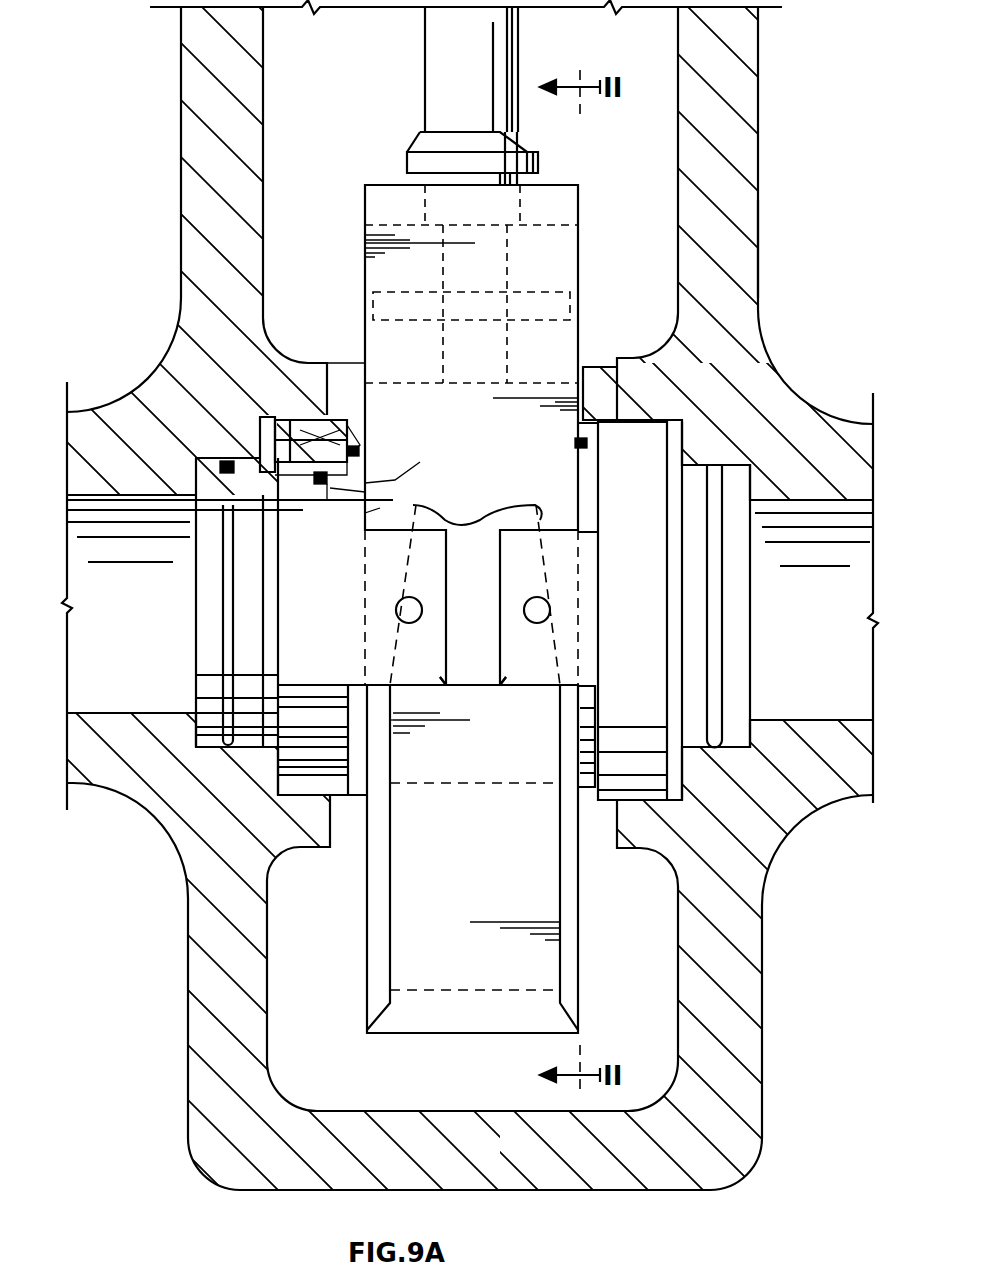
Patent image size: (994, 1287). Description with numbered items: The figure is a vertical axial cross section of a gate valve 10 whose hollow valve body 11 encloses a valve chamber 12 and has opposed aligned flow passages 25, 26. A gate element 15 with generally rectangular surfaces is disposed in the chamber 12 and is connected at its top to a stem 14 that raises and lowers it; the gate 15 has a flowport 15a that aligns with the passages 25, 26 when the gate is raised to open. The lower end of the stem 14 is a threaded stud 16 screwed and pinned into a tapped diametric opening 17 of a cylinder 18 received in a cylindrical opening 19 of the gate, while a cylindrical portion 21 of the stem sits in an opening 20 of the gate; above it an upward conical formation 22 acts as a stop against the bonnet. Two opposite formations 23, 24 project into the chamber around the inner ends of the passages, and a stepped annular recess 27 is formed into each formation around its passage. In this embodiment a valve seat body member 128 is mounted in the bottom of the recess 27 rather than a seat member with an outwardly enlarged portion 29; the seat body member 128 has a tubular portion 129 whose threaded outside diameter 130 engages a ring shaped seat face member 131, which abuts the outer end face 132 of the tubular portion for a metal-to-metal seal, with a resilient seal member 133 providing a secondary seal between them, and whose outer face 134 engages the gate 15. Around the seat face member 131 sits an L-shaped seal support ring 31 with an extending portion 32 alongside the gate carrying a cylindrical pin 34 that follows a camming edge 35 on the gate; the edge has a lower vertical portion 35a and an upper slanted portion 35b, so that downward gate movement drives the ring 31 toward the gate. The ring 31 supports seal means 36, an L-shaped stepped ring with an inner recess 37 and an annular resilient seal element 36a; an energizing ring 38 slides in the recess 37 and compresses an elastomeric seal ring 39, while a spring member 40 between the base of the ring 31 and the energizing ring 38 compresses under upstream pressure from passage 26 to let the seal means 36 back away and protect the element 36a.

The gate valve 10 is at (752, 184).
The valve body 11 is at (758, 250).
The valve chamber 12 is at (678, 108).
The stem 14 is at (425, 42).
The gate element 15 is at (578, 210).
The flowport 15a is at (455, 783).
The threaded stud 16 is at (440, 262).
The tapped diametric opening 17 is at (505, 262).
The cylinder 18 is at (578, 296).
The cylindrical opening 19 is at (545, 228).
The opening 20 is at (425, 215).
The cylindrical portion 21 is at (405, 170).
The upward conical formation 22 is at (418, 132).
The formation 23 is at (322, 363).
The formation 24 is at (583, 370).
The flow passage 25 is at (92, 713).
The flow passage 26 is at (826, 720).
The stepped annular recess 27 is at (648, 423).
The outwardly enlarged portion 29 is at (196, 800).
The seal support ring 31 is at (353, 430).
The extending portion 32 is at (475, 692).
The cylindrical pin 34 is at (530, 610).
The camming edge 35 is at (560, 820).
The vertical portion 35a is at (392, 750).
The slanted portion 35b is at (477, 518).
The seal means 36 is at (355, 440).
The annular resilient seal element 36a is at (360, 460).
The inner recess 37 is at (300, 425).
The energizing ring 38 is at (280, 420).
The seal ring 39 is at (352, 425).
The spring member 40 is at (262, 440).
The valve seat body member 128 is at (196, 740).
The tubular portion 129 is at (312, 520).
The threaded outside diameter 130 is at (300, 520).
The ring shaped seat face member 131 is at (420, 470).
The outer end face 132 is at (375, 490).
The resilient seal member 133 is at (327, 500).
The outer face 134 is at (440, 505).